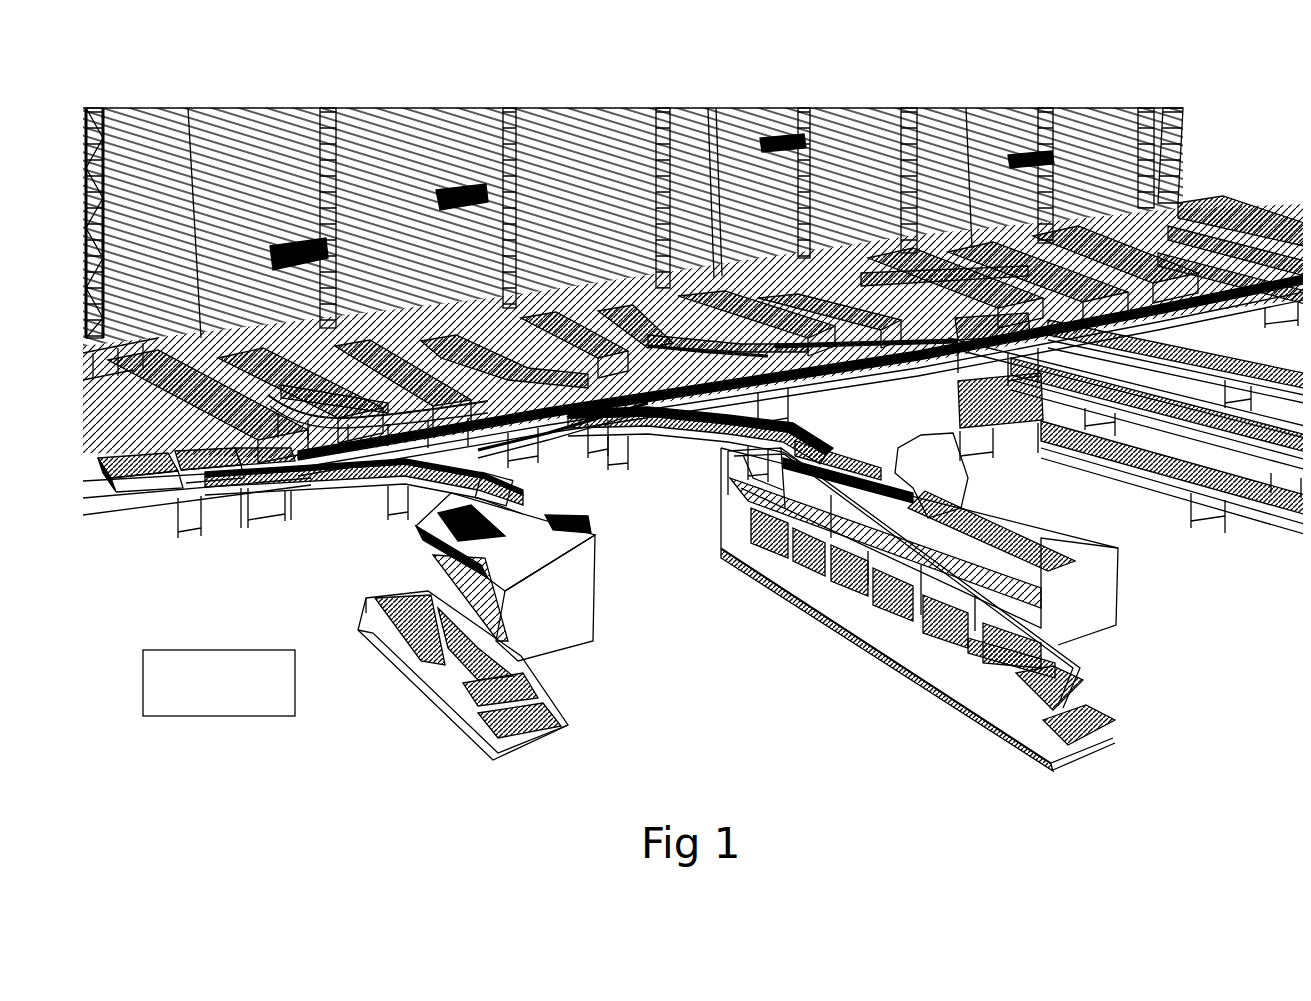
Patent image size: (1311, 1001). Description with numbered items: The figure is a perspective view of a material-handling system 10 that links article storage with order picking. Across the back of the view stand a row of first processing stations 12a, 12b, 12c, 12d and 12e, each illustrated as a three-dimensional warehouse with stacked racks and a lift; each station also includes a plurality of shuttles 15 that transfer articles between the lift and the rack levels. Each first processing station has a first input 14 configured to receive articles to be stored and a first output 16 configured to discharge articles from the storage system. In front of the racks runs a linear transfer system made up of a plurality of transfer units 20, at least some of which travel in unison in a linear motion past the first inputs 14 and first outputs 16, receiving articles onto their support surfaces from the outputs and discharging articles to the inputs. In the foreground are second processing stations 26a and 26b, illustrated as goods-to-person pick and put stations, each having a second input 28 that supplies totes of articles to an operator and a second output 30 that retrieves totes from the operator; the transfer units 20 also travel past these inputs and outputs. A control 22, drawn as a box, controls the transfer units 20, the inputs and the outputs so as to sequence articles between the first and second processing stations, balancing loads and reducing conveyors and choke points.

The material-handling system 10 is at (745, 692).
The first processing station 12a is at (536, 94).
The first processing station 12b is at (786, 91).
The first processing station 12c is at (1035, 100).
The first processing station 12d is at (333, 94).
The first processing station 12e is at (188, 98).
The first input 14 is at (490, 438).
The shuttle 15 is at (280, 240).
The first output 16 is at (378, 416).
The transfer unit 20 is at (1060, 358).
The control 22 is at (188, 642).
The second processing station 26a is at (1124, 605).
The second processing station 26b is at (600, 597).
The second input 28 is at (490, 433).
The second output 30 is at (630, 420).